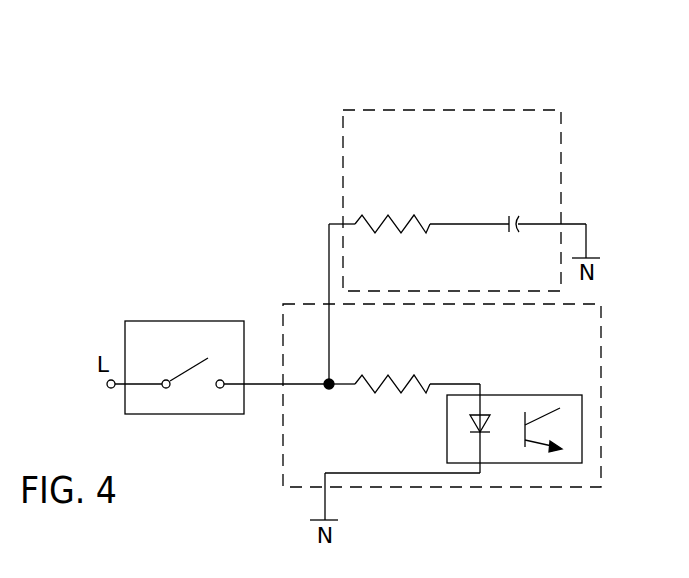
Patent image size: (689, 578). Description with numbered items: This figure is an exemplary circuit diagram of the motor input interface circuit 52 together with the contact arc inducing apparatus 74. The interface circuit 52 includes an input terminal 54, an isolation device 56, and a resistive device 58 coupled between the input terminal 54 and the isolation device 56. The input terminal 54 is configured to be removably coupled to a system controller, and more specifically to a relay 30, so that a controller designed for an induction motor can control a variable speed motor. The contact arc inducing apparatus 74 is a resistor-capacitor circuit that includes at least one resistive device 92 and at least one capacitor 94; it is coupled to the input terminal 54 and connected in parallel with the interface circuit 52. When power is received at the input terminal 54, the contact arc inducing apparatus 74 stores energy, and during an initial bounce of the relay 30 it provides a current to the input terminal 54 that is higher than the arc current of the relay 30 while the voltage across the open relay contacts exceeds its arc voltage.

The relay 30 is at (162, 321).
The contact arc inducing apparatus 74 is at (380, 102).
The resistive device 92 is at (420, 213).
The capacitor 94 is at (506, 218).
The interface circuit 52 is at (601, 362).
The input terminal 54 is at (326, 382).
The resistive device 58 is at (418, 375).
The isolation device 56 is at (533, 393).